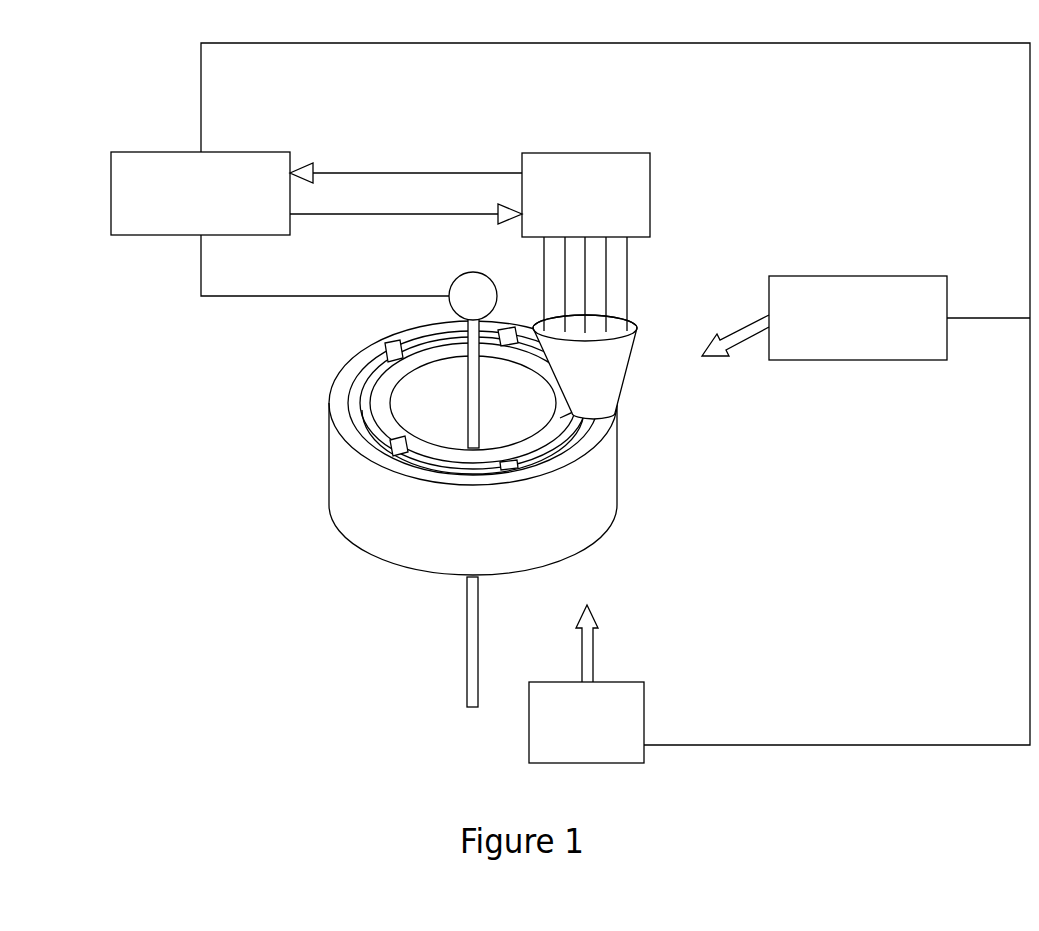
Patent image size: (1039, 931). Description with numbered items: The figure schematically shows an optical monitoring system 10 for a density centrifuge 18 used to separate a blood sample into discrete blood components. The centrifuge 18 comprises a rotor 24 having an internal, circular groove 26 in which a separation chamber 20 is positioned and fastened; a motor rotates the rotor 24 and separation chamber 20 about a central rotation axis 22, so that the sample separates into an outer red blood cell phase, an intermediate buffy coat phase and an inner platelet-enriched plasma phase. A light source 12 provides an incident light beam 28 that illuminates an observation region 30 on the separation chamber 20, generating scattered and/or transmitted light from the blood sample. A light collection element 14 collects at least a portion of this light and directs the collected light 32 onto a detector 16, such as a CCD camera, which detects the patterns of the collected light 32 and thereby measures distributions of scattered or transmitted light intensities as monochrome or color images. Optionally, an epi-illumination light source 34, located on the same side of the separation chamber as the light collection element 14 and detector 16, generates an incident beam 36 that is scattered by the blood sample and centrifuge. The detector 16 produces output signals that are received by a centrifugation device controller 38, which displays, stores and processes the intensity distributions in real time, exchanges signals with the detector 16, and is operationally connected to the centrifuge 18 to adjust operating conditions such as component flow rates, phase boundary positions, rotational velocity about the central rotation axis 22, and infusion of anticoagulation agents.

The monitoring system 10 is at (243, 594).
The light source 12 is at (593, 708).
The light collection element 14 is at (635, 327).
The detector 16 is at (600, 163).
The density centrifuge 18 is at (428, 444).
The separation chamber 20 is at (372, 417).
The central rotation axis 22 is at (467, 635).
The rotor 24 is at (593, 487).
The circular groove 26 is at (377, 378).
The incident light beam 28 is at (595, 650).
The observation region 30 is at (590, 417).
The collected light 32 is at (627, 270).
The epi-illumination light source 34 is at (890, 360).
The incident beam 36 is at (738, 345).
The centrifugation device controller 38 is at (148, 163).